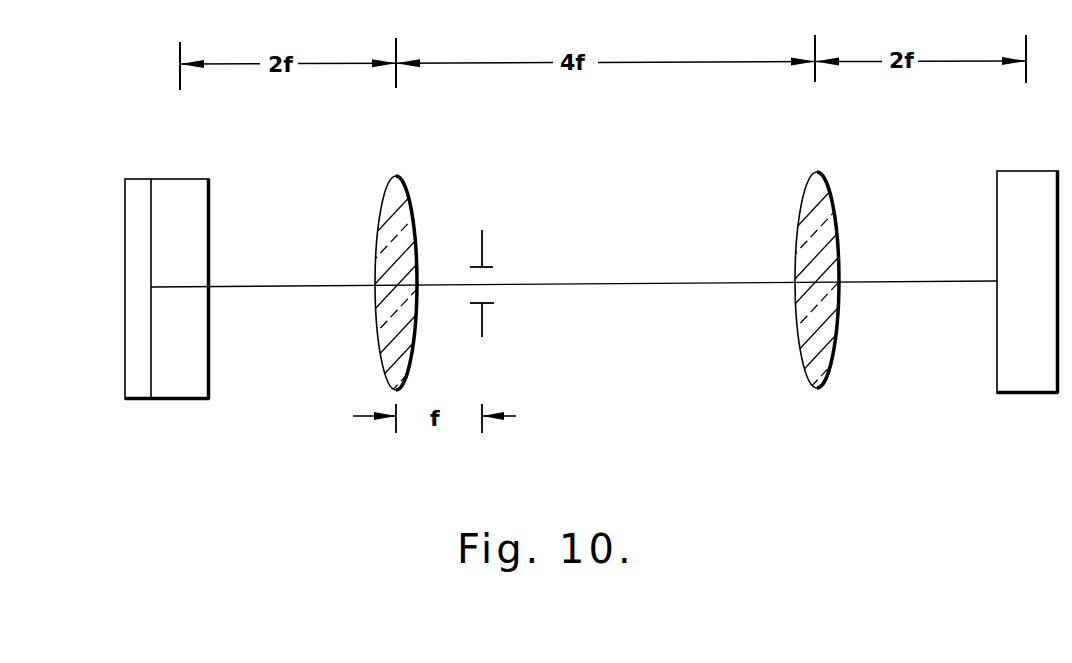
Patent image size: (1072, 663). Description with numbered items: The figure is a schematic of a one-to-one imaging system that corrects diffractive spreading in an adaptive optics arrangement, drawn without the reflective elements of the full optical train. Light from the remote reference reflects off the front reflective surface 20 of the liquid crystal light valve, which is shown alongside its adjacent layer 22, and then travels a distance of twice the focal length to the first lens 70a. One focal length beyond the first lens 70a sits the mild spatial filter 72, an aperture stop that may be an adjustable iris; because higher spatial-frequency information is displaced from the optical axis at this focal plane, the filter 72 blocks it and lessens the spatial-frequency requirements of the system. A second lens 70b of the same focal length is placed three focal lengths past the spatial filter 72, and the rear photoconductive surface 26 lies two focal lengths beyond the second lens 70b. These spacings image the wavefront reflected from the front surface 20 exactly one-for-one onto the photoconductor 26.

The front reflective surface 20 is at (170, 390).
The input transparency 22 is at (140, 395).
The rear photoconductive surface 26 is at (997, 393).
The first lens 70a is at (380, 352).
The second lens 70b is at (808, 180).
The mild spatial filter 72 is at (484, 253).